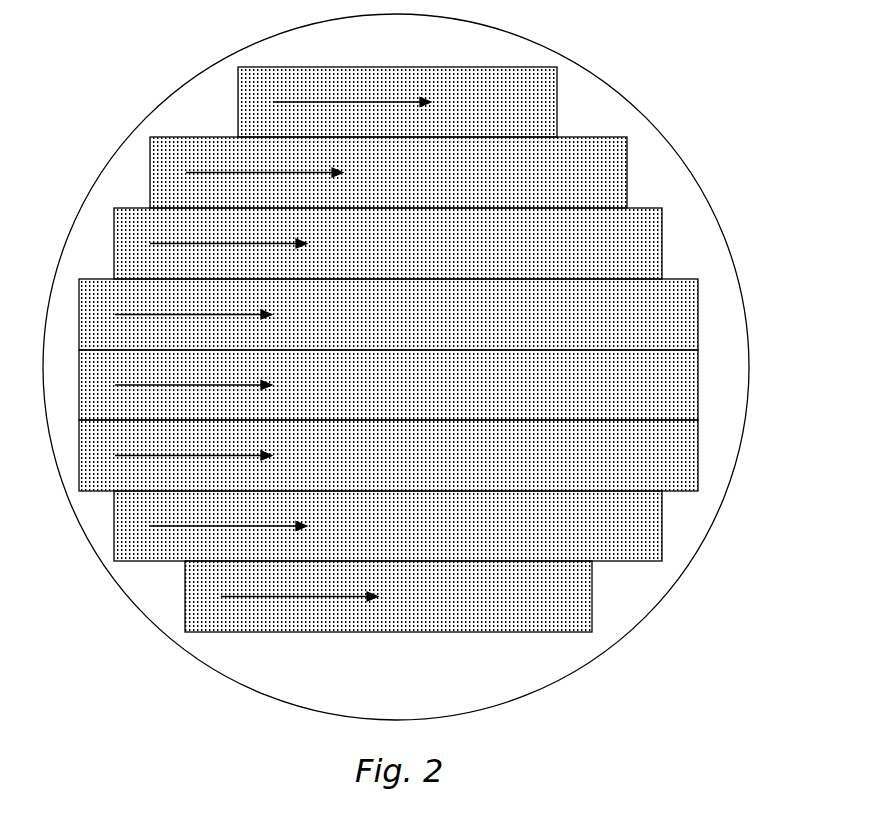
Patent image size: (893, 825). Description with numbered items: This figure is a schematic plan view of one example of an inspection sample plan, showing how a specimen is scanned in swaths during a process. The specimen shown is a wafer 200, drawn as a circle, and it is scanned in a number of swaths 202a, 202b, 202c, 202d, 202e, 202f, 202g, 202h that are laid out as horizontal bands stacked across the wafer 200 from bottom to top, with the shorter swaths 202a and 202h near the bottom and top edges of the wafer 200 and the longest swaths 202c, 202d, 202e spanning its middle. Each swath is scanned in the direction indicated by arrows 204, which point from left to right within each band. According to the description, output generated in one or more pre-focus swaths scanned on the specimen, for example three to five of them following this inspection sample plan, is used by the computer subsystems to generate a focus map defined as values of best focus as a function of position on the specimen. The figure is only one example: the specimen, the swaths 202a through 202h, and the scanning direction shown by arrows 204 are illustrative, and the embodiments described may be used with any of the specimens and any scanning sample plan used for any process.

The wafer 200 is at (565, 55).
The swath 202a is at (535, 606).
The swath 202b is at (535, 536).
The swath 202c is at (535, 466).
The swath 202d is at (535, 395).
The swath 202e is at (535, 324).
The swath 202f is at (535, 254).
The swath 202g is at (535, 182).
The swath 202h is at (535, 112).
The arrows 204 is at (332, 596).